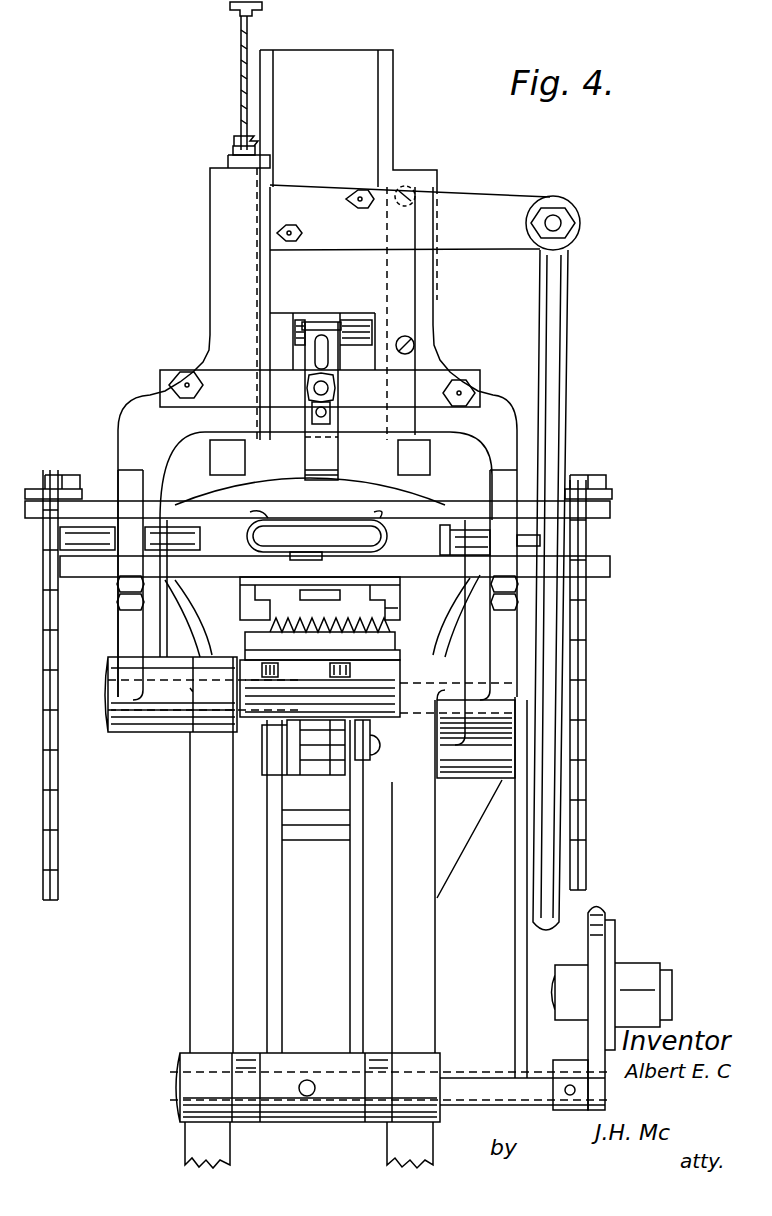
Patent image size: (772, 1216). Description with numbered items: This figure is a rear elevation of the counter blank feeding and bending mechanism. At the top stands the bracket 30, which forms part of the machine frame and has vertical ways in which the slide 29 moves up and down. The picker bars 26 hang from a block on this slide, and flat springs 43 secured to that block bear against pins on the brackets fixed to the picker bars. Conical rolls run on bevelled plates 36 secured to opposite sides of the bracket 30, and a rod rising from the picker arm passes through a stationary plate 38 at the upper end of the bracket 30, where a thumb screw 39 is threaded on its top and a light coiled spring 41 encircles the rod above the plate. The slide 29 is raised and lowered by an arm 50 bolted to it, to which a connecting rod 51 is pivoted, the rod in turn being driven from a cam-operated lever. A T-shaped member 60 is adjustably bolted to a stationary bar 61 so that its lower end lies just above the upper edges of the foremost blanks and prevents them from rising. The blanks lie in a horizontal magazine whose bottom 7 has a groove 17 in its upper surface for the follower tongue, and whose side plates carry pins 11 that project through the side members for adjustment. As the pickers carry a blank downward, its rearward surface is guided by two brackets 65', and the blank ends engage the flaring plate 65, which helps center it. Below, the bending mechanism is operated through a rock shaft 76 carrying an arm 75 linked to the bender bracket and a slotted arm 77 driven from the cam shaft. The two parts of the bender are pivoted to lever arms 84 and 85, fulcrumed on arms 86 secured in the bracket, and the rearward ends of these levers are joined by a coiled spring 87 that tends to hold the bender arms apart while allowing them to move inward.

The bottom 7 is at (187, 562).
The pins 11 is at (640, 542).
The groove 17 is at (325, 555).
The picker bars 26 is at (245, 478).
The slide 29 is at (375, 100).
The bracket 30 is at (210, 280).
The bevelled plates 36 is at (445, 462).
The stationary plate 38 is at (230, 162).
The thumb screw 39 is at (230, 5).
The coiled spring 41 is at (238, 141).
The flat springs 43 is at (262, 548).
The arm 50 is at (480, 196).
The connecting rod 51 is at (566, 345).
The T-shaped member 60 is at (305, 470).
The stationary bar 61 is at (230, 385).
The plate 65 is at (300, 598).
The brackets 65' is at (379, 593).
The arm 75 is at (355, 963).
The rock shaft 76 is at (473, 1088).
The arm 77 is at (612, 925).
The lever arm 84 is at (248, 637).
The lever arm 85 is at (395, 635).
The arm 86 is at (293, 647).
The coiled spring 87 is at (300, 625).